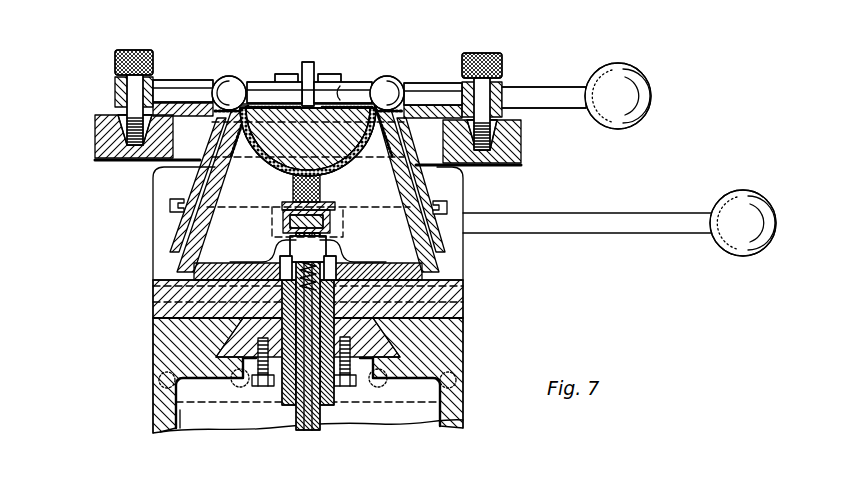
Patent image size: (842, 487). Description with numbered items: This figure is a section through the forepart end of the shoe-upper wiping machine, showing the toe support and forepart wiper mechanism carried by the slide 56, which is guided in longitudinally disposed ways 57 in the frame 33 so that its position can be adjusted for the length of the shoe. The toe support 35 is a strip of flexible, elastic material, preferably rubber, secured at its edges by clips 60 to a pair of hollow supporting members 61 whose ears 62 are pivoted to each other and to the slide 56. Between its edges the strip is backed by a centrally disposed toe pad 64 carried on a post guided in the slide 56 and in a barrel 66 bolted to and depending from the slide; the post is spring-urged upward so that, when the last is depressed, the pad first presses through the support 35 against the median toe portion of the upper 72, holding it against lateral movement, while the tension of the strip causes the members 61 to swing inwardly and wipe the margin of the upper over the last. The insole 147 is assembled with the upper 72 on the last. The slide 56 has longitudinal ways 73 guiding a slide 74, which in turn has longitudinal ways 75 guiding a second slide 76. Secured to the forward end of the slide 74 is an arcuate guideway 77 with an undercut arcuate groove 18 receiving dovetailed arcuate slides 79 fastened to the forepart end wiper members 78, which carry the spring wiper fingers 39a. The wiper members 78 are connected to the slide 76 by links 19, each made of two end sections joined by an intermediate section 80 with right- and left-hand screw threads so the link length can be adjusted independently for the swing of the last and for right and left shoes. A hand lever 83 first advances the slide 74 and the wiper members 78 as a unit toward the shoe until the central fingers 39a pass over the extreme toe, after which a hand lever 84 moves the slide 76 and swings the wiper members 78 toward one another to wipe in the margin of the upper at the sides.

The undercut arcuate groove 18 is at (105, 168).
The links 19 is at (190, 88).
The frame 33 is at (455, 417).
The toe support 35 is at (248, 140).
The forepart wiper fingers 39a is at (255, 95).
The slide 56 is at (367, 362).
The longitudinal ways 57 is at (230, 325).
The clips 60 is at (178, 228).
The hollow supporting members 61 is at (183, 266).
The ears 62 is at (323, 264).
The toe pad 64 is at (294, 190).
The barrel 66 is at (283, 402).
The upper 72 is at (340, 166).
The longitudinal ways 73 is at (170, 201).
The slide 74 is at (365, 208).
The longitudinal ways 75 is at (450, 78).
The second slide 76 is at (338, 95).
The arcuate guideway 77 is at (100, 160).
The forepart end wiper members 78 is at (115, 112).
The dovetailed arcuate slides 79 is at (96, 128).
The intermediate section 80 is at (233, 83).
The hand lever 83 is at (745, 215).
The hand lever 84 is at (647, 97).
The insole 147 is at (311, 95).